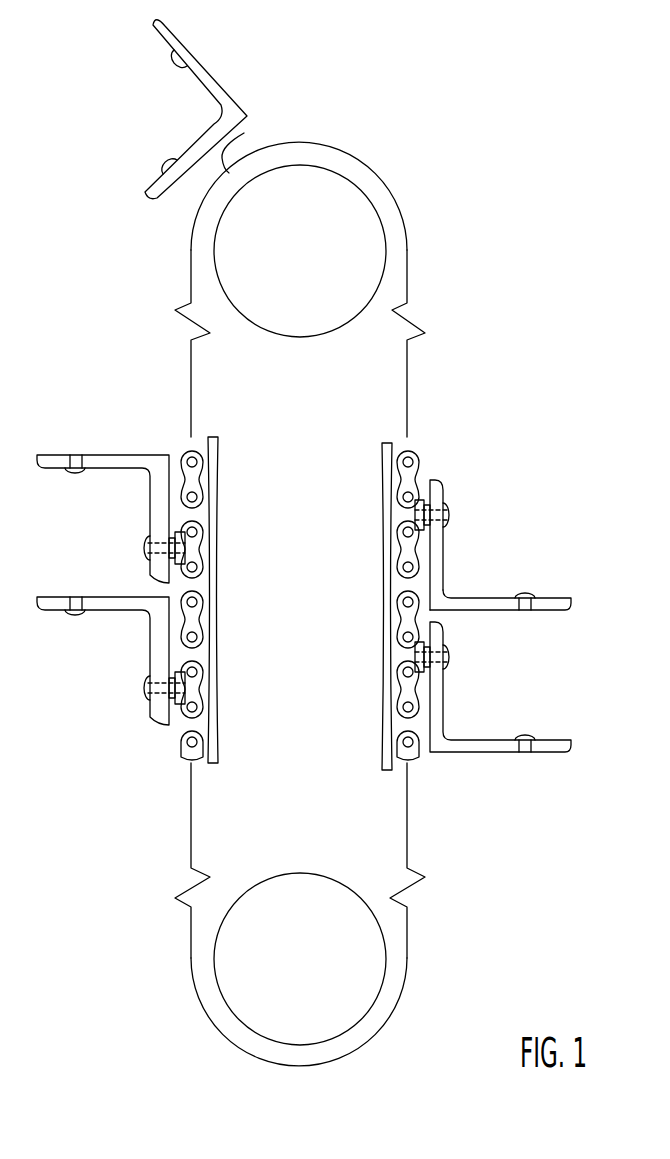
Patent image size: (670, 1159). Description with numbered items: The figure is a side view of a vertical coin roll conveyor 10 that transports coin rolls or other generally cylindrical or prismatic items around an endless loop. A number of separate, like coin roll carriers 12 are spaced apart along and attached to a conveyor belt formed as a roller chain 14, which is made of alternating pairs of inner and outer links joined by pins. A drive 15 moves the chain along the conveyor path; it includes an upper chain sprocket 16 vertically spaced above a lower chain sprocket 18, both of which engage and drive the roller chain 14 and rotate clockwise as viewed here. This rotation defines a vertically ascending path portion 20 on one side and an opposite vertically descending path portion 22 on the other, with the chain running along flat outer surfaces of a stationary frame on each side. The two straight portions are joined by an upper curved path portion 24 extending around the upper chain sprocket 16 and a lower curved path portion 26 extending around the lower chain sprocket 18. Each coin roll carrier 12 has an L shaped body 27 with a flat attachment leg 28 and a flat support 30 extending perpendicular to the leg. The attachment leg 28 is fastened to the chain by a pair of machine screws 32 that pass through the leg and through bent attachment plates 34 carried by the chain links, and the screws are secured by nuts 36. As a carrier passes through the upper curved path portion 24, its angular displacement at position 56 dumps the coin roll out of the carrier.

The vertical coin roll conveyor 10 is at (572, 366).
The coin roll carrier 12 is at (180, 40).
The roller chain 14 is at (177, 452).
The drive 15 is at (390, 284).
The upper chain sprocket 16 is at (360, 190).
The lower chain sprocket 18 is at (237, 1017).
The vertically ascending path portion 20 is at (407, 836).
The vertically descending path portion 22 is at (191, 807).
The upper curved path portion 24 is at (400, 204).
The lower curved path portion 26 is at (378, 1032).
The L shaped body 27 is at (493, 529).
The attachment leg 28 is at (445, 553).
The support 30 is at (492, 592).
The machine screw 32 is at (455, 512).
The bent attachment plate 34 is at (398, 481).
The nut 36 is at (408, 553).
The position 56 is at (244, 133).